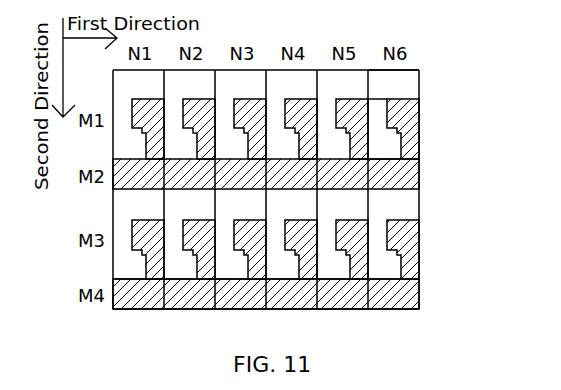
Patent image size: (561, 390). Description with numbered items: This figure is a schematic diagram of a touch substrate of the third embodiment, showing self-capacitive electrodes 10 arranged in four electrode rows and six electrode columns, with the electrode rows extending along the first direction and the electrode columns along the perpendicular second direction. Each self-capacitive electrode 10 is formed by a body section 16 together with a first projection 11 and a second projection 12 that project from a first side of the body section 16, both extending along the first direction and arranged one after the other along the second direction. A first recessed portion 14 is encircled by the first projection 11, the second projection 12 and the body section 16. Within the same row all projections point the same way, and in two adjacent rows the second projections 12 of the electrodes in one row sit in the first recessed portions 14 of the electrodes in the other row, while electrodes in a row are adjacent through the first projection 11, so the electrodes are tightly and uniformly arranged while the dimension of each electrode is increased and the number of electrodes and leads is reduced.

The self-capacitive electrode 10 is at (403, 182).
The first projection 11 is at (403, 88).
The second projection 12 is at (392, 147).
The first recessed portion 14 is at (403, 113).
The body section 16 is at (375, 113).